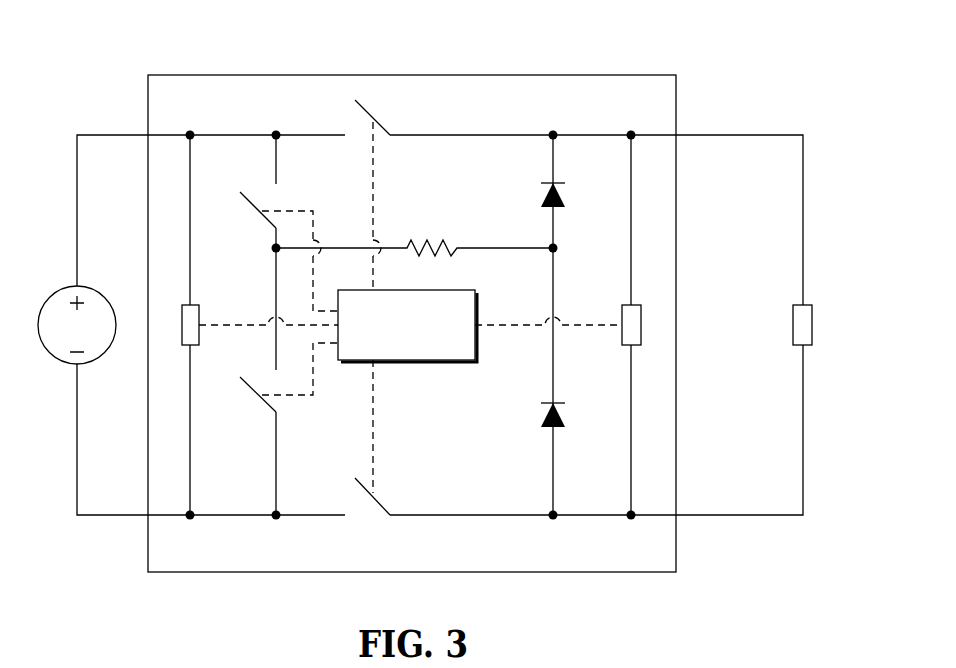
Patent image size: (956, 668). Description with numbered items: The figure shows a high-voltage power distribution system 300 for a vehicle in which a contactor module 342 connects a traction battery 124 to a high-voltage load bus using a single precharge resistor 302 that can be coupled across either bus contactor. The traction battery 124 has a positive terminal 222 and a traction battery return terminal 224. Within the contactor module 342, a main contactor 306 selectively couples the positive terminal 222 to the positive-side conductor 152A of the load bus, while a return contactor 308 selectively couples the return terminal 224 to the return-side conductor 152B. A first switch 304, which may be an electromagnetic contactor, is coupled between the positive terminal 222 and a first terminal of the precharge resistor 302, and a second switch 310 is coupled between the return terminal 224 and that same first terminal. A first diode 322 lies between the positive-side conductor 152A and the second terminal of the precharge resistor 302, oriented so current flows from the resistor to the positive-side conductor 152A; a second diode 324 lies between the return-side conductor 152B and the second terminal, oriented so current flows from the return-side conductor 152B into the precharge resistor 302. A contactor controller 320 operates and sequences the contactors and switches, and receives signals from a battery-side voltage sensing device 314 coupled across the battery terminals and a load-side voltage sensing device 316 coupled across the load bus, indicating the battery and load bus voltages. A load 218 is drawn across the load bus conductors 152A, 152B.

The high-voltage power distribution system 300 is at (714, 66).
The contactor module 342 is at (408, 75).
The positive terminal 222 is at (118, 135).
The traction battery return terminal 224 is at (117, 515).
The traction battery 124 is at (50, 296).
The positive-side conductor 152A is at (735, 135).
The return-side conductor 152B is at (738, 515).
The main contactor 306 is at (382, 125).
The return contactor 308 is at (382, 503).
The first switch 304 is at (252, 204).
The second switch 310 is at (250, 388).
The precharge resistor 302 is at (445, 240).
The battery-side voltage sensing device 314 is at (199, 317).
The load-side voltage sensing device 316 is at (622, 315).
The load 218 is at (793, 317).
The contactor controller 320 is at (413, 360).
The first diode 322 is at (541, 196).
The second diode 324 is at (541, 414).